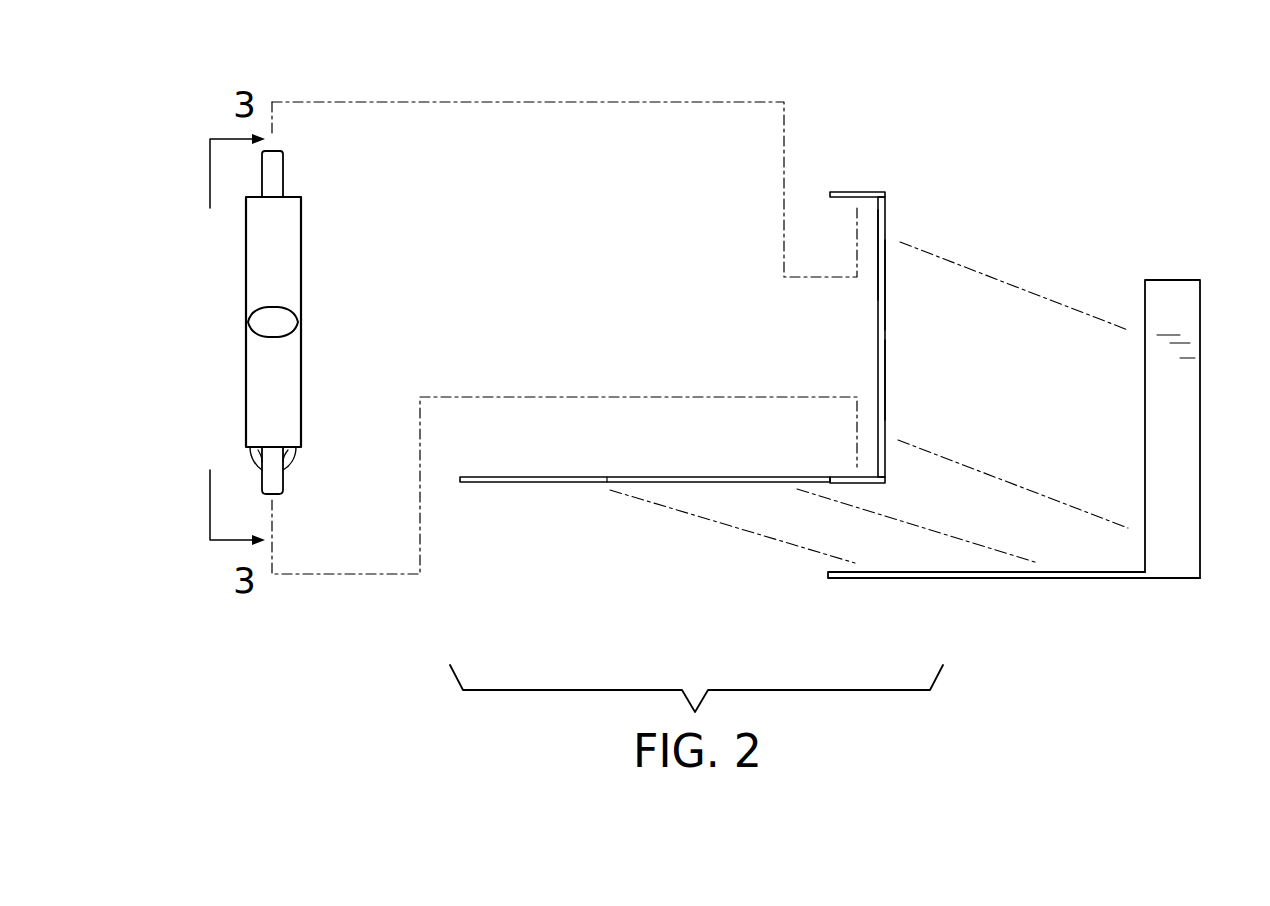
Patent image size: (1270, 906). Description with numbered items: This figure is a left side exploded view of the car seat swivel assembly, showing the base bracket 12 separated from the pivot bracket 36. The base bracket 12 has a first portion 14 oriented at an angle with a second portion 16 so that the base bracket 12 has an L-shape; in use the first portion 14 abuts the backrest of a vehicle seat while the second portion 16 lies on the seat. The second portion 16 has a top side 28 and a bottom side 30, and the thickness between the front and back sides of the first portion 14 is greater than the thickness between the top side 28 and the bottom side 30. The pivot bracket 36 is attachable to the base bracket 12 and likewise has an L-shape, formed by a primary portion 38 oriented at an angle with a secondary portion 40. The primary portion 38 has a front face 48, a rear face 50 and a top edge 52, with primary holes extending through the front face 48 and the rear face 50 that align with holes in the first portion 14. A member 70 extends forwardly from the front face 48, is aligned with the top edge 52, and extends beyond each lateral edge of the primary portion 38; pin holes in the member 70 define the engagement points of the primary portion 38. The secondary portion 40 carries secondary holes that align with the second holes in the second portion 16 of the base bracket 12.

The base bracket 12 is at (1047, 420).
The first portion 14 is at (1168, 280).
The second portion 16 is at (1097, 580).
The top side 28 is at (1068, 572).
The bottom side 30 is at (1005, 580).
The pivot bracket 36 is at (844, 267).
The primary portion 38 is at (886, 287).
The secondary portion 40 is at (540, 483).
The front face 48 is at (878, 255).
The rear face 50 is at (883, 380).
The top edge 52 is at (884, 187).
The member 70 is at (855, 190).